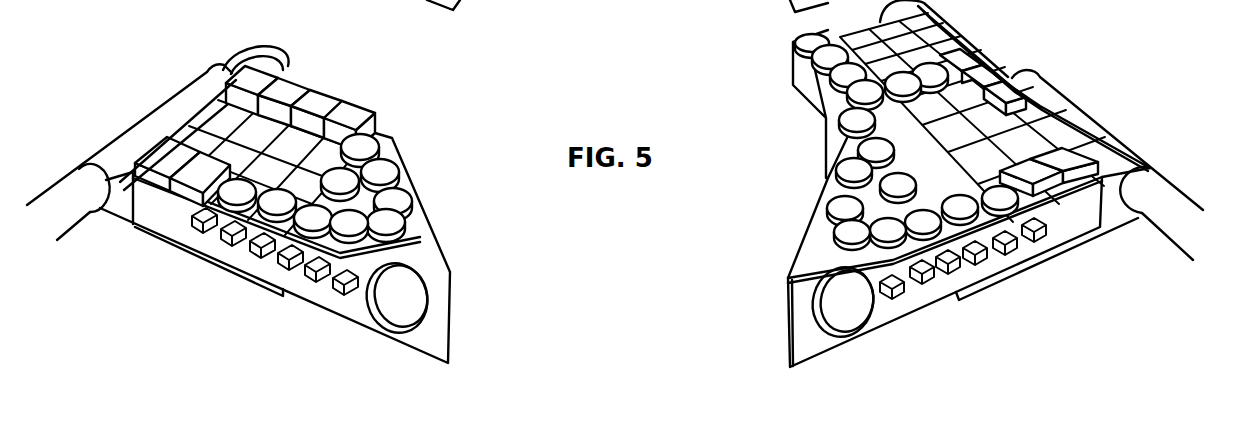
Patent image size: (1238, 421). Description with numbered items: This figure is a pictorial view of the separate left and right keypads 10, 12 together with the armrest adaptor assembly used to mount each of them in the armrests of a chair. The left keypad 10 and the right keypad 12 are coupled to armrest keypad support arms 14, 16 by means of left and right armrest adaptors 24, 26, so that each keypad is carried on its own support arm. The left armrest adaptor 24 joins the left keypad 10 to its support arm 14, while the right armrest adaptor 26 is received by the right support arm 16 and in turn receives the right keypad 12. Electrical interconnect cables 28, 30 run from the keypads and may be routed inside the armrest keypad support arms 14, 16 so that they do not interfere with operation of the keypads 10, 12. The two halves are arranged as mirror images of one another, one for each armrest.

The left keypad 10 is at (450, 228).
The right keypad 12 is at (790, 233).
The armrest keypad support arm 14 is at (28, 248).
The armrest keypad support arm 16 is at (1207, 250).
The left armrest adaptor 24 is at (167, 108).
The right armrest adaptor 26 is at (1068, 113).
The electrical interconnect cable 28 is at (228, 50).
The electrical interconnect cable 30 is at (977, 29).